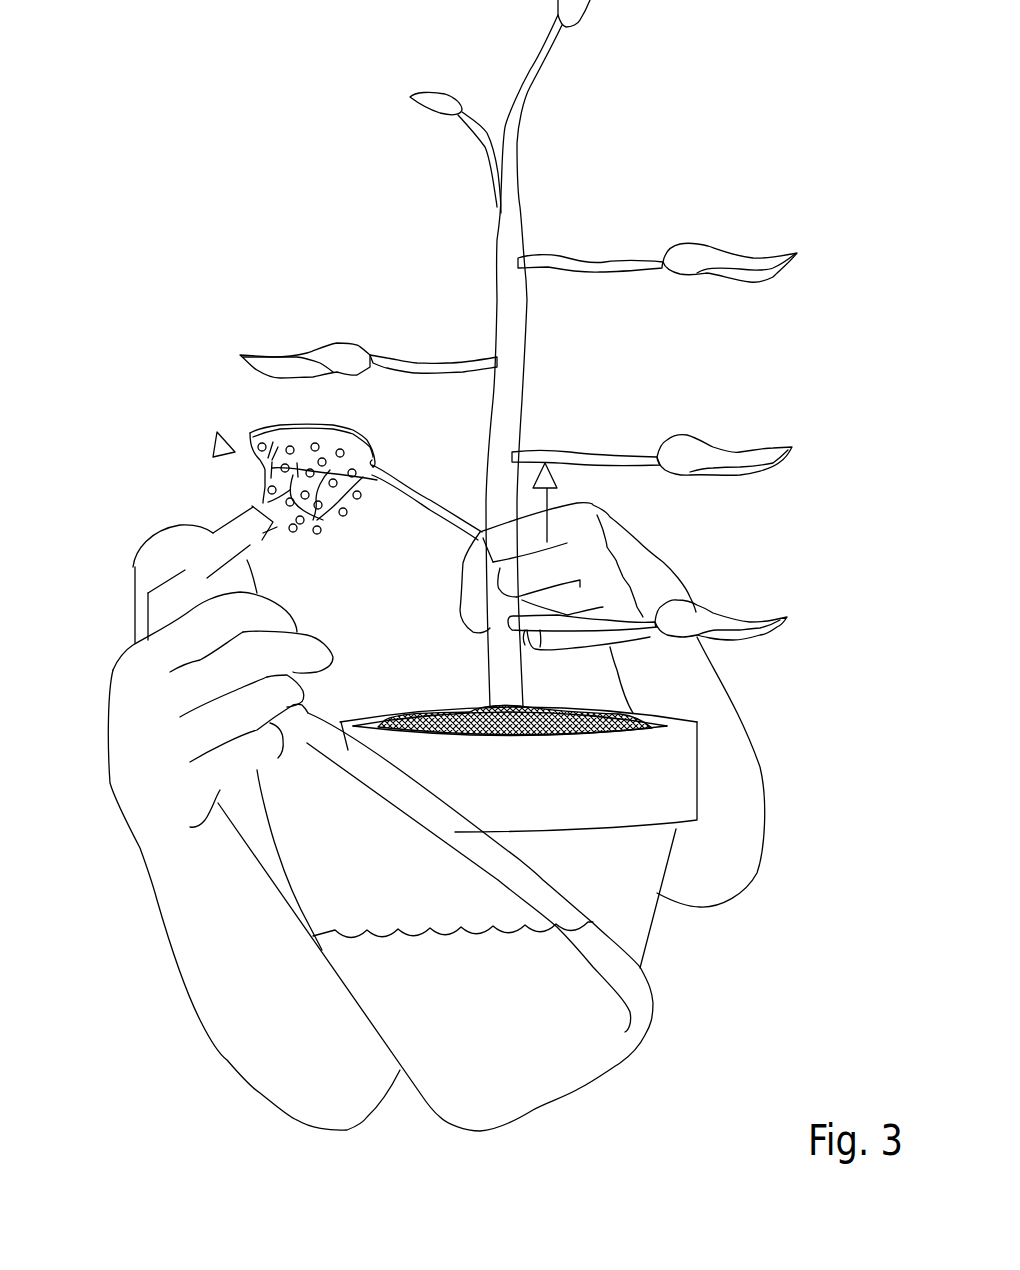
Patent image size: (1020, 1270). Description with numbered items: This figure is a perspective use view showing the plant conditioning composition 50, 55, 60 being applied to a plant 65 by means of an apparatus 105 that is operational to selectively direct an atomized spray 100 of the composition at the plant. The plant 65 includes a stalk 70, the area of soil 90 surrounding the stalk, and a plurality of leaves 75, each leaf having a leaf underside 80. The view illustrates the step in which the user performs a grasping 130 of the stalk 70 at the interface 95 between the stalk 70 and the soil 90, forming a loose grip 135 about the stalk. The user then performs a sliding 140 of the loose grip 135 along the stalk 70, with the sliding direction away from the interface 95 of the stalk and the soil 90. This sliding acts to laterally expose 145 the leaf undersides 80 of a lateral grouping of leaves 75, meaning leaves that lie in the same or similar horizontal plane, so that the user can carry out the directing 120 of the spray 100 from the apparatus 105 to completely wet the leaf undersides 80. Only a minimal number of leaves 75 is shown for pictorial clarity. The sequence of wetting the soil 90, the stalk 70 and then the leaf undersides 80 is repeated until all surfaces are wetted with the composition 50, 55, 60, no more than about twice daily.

The plant conditioner composition 50 is at (628, 837).
The plant conditioning composition 55 is at (628, 837).
The plant conditioning composition 60 is at (513, 930).
The plant 65 is at (640, 163).
The stalk 70 is at (484, 660).
The leaves 75 is at (260, 448).
The leaf underside 80 is at (263, 462).
The soil 90 is at (453, 708).
The interface 95 is at (525, 707).
The atomized spray 100 is at (329, 518).
The directing 120 is at (353, 477).
The apparatus 105 is at (173, 557).
The grasping 130 is at (656, 705).
The loose grip 135 is at (600, 586).
The sliding 140 is at (552, 505).
The laterally expose 145 is at (213, 443).